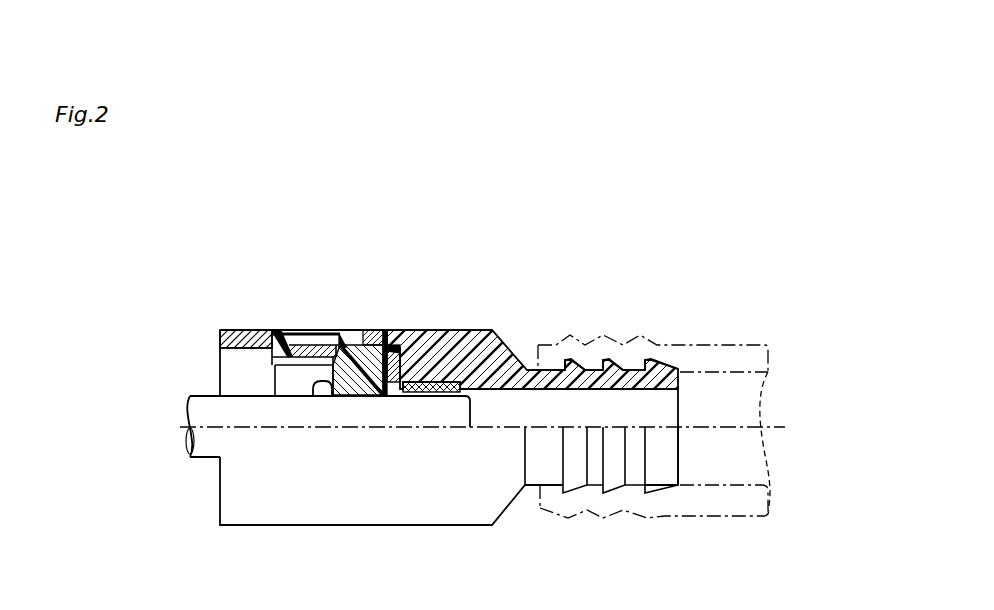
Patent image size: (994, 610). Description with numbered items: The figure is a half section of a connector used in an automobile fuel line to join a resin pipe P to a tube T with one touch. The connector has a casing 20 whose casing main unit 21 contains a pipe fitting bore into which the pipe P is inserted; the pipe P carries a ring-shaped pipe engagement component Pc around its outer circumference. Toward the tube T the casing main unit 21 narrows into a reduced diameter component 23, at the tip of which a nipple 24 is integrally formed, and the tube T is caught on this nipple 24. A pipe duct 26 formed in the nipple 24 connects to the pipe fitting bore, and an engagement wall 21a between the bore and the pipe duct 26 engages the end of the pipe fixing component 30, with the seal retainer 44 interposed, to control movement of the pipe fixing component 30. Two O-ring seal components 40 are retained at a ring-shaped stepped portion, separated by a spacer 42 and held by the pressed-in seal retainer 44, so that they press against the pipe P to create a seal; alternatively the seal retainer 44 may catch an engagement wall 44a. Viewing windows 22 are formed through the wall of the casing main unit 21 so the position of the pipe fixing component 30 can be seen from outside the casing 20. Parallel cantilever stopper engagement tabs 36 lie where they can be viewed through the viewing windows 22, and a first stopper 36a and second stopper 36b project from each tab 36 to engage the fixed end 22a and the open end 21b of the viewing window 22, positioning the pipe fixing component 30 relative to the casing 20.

The casing 20 is at (510, 357).
The casing main unit 21 is at (475, 380).
The engagement wall 21a is at (388, 397).
The open end of the viewing window 21b is at (223, 347).
The viewing window 22 is at (296, 338).
The fixed end of the viewing window 22a is at (277, 353).
The reduced diameter component 23 is at (518, 362).
The nipple 24 is at (617, 377).
The pipe duct 26 is at (630, 398).
The pipe fixing component 30 is at (368, 330).
The stopper engagement tab 36 is at (311, 345).
The first stopper 36a is at (345, 333).
The second stopper 36b is at (273, 333).
The seal component 40 is at (447, 400).
The spacer 42 is at (437, 381).
The seal retainer 44 is at (423, 350).
The engagement wall 44a is at (397, 350).
The pipe P is at (207, 450).
The pipe engagement component Pc is at (325, 417).
The tube T is at (738, 352).